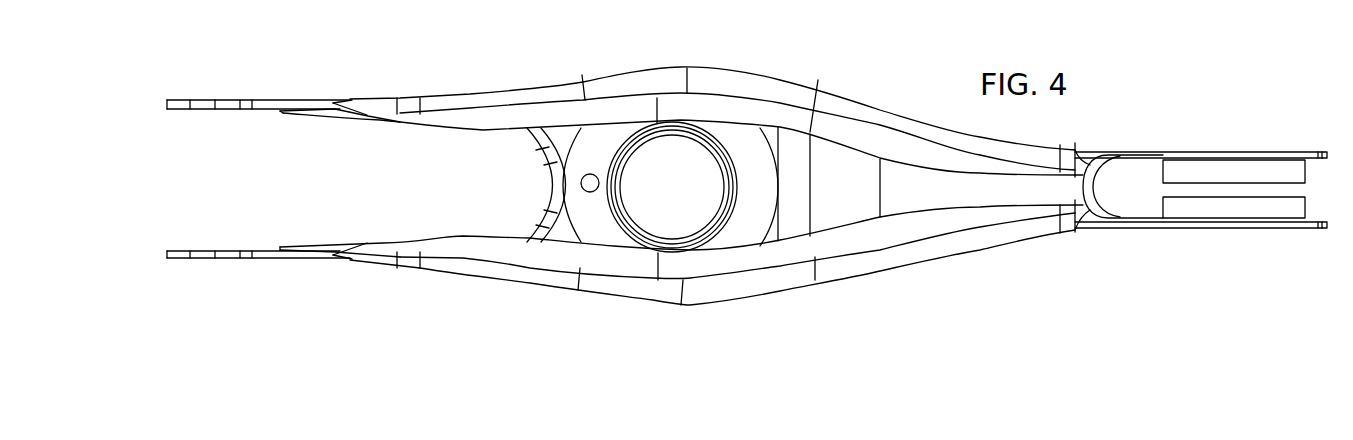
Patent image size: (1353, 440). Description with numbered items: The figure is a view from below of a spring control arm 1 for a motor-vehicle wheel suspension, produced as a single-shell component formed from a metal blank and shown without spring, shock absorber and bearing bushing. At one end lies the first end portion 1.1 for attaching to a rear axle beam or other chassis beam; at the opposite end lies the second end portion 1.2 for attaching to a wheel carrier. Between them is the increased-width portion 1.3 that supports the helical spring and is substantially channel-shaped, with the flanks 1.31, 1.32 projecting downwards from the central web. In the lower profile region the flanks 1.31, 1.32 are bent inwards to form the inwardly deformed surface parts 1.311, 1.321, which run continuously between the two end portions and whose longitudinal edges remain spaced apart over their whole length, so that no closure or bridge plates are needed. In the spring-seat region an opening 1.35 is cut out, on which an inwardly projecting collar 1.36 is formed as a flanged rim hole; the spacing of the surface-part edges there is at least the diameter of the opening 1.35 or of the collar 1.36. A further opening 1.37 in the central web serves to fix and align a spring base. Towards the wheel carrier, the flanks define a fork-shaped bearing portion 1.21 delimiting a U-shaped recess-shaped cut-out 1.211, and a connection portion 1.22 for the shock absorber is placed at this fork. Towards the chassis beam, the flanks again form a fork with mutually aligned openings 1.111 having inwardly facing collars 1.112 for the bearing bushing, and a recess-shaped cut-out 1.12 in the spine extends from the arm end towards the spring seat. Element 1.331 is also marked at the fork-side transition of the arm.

The spring control arm 1 is at (488, 298).
The first end portion 1.1 is at (1322, 152).
The openings 1.111 is at (1240, 190).
The collars 1.112 is at (1267, 175).
The recess-shaped cut-out 1.12 is at (1125, 183).
The second end portion 1.2 is at (172, 99).
The fork-shaped bearing portion 1.21 is at (185, 112).
The recess-shaped cut-out 1.211 is at (293, 188).
The connection portion 1.22 is at (335, 97).
The increased-width portion 1.3 is at (730, 290).
The flank 1.31 is at (567, 287).
The inwardly deformed surface part 1.311 is at (810, 258).
The flank 1.32 is at (583, 82).
The inwardly deformed surface part 1.321 is at (820, 113).
The fork 1.331 is at (1112, 200).
The opening 1.35 is at (675, 228).
The collar 1.36 is at (723, 212).
The opening 1.37 is at (582, 182).